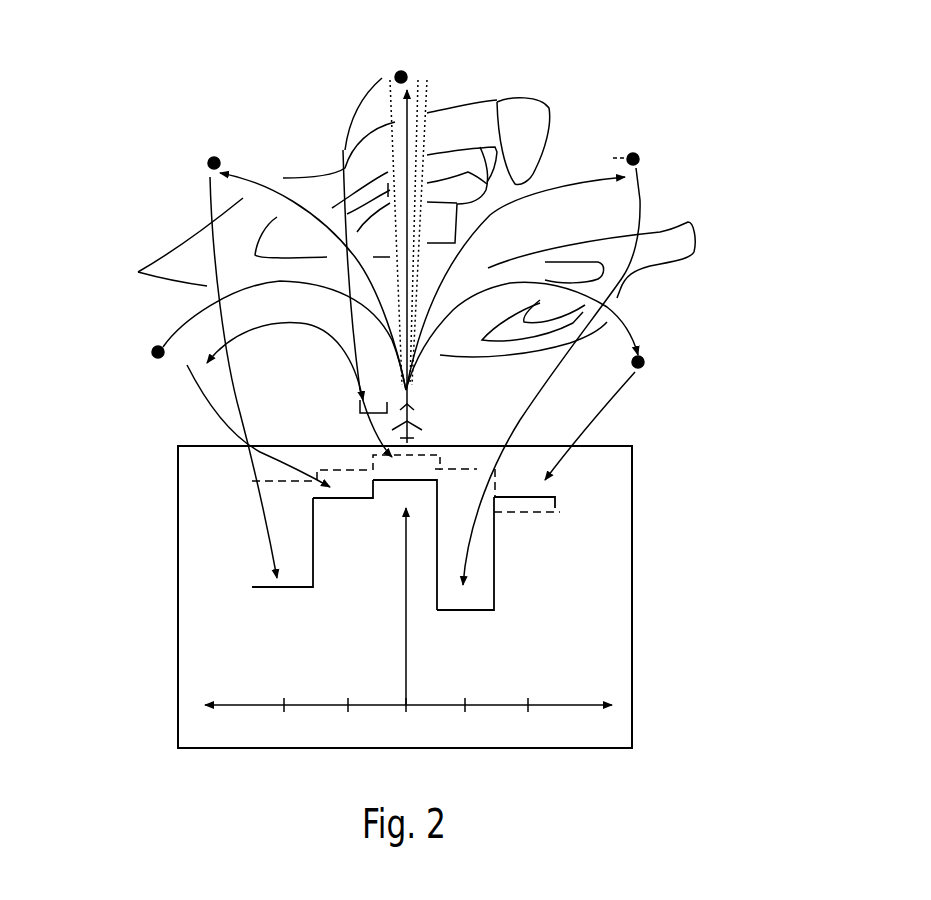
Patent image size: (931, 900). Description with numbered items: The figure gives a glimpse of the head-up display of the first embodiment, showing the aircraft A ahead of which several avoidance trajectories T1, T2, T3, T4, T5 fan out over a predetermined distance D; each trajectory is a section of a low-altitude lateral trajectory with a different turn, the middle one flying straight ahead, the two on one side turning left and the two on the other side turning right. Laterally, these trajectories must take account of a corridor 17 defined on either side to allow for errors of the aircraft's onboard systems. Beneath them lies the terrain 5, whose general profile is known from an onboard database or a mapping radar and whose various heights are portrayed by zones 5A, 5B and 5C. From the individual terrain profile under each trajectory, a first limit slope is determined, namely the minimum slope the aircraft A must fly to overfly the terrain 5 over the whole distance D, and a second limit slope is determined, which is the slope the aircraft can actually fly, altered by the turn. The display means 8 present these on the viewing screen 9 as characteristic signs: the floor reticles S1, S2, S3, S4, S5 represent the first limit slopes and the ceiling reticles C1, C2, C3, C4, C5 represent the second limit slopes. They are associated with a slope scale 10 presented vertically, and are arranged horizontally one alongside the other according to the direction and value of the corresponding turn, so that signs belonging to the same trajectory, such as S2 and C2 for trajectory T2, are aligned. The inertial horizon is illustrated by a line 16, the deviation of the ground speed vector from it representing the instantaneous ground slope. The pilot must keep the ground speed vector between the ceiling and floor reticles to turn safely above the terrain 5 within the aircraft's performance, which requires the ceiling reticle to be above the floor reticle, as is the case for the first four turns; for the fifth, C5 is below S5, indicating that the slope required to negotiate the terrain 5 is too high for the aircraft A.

The terrain 5 is at (702, 230).
The terrain height zone 5A is at (548, 104).
The terrain height zone 5B is at (480, 147).
The terrain height zone 5C is at (479, 120).
The display means 8 is at (222, 762).
The viewing screen 9 is at (522, 750).
The slope scale 10 is at (397, 623).
The inertial horizon line 16 is at (545, 705).
The corridor 17 is at (240, 172).
The avoidance trajectory T1 is at (178, 316).
The avoidance trajectory T2 is at (270, 172).
The avoidance trajectory T3 is at (419, 93).
The avoidance trajectory T4 is at (610, 165).
The avoidance trajectory T5 is at (642, 327).
The characteristic sign (floor reticle) S1 is at (285, 593).
The characteristic sign (floor reticle) S2 is at (340, 510).
The characteristic sign (floor reticle) S3 is at (397, 497).
The characteristic sign (floor reticle) S4 is at (465, 622).
The characteristic sign (floor reticle) S5 is at (558, 488).
The characteristic sign (ceiling reticle) C1 is at (282, 487).
The characteristic sign (ceiling reticle) C2 is at (345, 464).
The characteristic sign (ceiling reticle) C3 is at (420, 438).
The characteristic sign (ceiling reticle) C4 is at (489, 460).
The characteristic sign (ceiling reticle) C5 is at (565, 512).
The aircraft A is at (415, 420).
The predetermined distance D is at (297, 368).